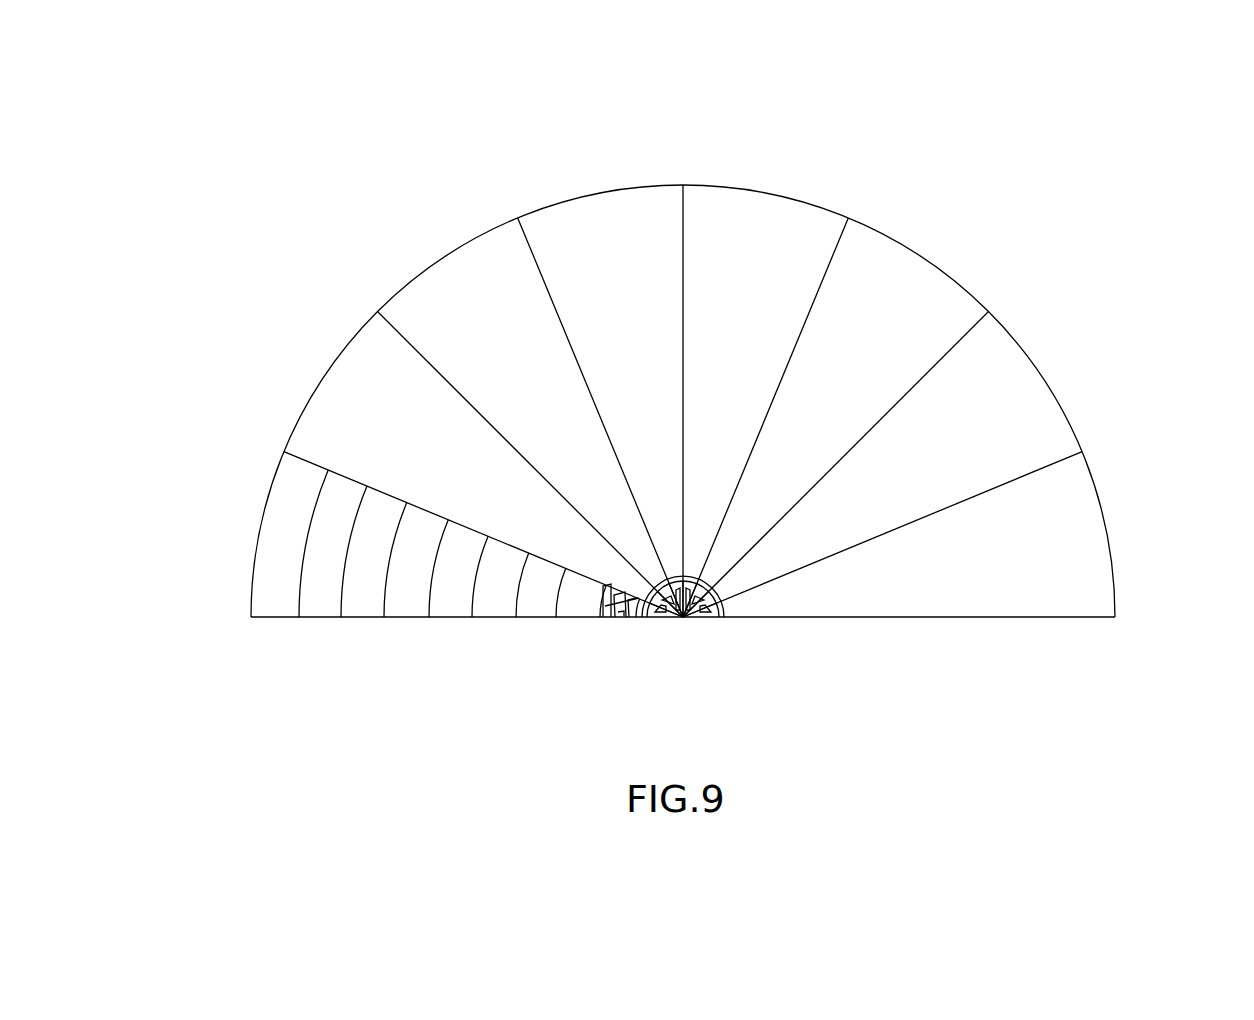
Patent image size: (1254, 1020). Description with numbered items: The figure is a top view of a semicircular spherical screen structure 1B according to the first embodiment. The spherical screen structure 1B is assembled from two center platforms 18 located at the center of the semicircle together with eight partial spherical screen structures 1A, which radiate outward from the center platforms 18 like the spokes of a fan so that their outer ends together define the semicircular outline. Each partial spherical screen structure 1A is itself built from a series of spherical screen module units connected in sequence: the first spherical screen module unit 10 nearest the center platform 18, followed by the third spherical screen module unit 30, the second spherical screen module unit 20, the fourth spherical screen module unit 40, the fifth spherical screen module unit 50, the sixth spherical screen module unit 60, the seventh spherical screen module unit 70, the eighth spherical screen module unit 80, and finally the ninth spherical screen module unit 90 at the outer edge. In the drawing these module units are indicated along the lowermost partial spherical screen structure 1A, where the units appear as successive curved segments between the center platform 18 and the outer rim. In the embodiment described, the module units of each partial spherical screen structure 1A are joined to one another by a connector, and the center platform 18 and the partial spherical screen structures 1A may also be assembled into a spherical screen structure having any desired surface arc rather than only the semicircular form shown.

The spherical screen structure 1B is at (208, 165).
The partial spherical screen structure 1A is at (347, 407).
The first spherical screen module unit 10 is at (622, 617).
The second spherical screen module unit 20 is at (534, 617).
The third spherical screen module unit 30 is at (584, 617).
The fourth spherical screen module unit 40 is at (490, 617).
The fifth spherical screen module unit 50 is at (448, 617).
The sixth spherical screen module unit 60 is at (402, 617).
The seventh spherical screen module unit 70 is at (358, 617).
The eighth spherical screen module unit 80 is at (314, 617).
The ninth spherical screen module unit 90 is at (272, 617).
The center platform 18 is at (705, 618).